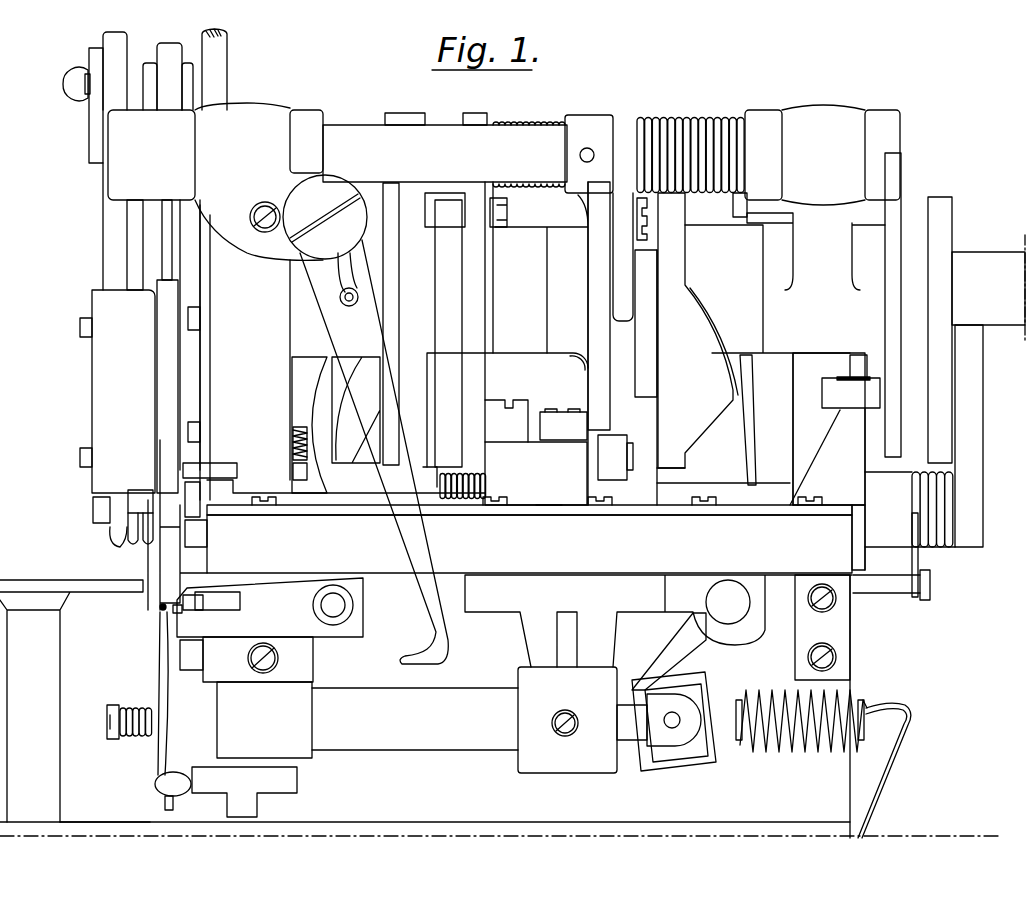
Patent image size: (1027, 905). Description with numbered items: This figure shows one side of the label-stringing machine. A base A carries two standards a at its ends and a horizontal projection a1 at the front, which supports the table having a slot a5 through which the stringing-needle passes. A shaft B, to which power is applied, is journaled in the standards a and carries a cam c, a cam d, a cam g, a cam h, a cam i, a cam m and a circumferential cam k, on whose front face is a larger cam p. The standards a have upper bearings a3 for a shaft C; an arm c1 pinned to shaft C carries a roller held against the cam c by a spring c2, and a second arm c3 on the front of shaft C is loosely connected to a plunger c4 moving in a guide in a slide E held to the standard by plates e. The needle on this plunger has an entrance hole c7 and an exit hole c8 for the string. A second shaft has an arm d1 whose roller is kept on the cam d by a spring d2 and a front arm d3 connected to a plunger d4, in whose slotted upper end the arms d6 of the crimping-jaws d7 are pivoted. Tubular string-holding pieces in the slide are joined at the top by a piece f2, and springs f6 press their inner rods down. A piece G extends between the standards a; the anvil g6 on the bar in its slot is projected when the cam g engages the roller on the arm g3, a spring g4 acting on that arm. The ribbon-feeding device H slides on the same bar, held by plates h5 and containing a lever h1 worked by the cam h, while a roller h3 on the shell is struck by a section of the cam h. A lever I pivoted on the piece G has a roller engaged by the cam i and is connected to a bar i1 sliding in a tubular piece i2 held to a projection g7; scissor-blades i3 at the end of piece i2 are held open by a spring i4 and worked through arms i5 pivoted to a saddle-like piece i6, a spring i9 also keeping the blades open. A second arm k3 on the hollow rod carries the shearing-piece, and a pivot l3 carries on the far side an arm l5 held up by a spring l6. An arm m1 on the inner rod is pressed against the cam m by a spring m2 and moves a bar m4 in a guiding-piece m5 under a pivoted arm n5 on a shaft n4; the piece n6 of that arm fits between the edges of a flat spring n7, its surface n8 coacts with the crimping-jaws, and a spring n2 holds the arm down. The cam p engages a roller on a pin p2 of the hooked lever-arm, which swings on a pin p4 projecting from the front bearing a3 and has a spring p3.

The second arm c3 is at (95, 97).
The arm d3 is at (168, 50).
The plunger d4 is at (188, 63).
The plunger c4 is at (100, 548).
The bearings a3 is at (215, 181).
The standards a is at (532, 355).
The pin p4 is at (325, 217).
The spring p3 is at (340, 268).
The pin p2 is at (374, 452).
The circumferential cam k is at (398, 324).
The cam d is at (445, 330).
The shaft C is at (445, 147).
The spring d2 is at (556, 120).
The arm d1 is at (490, 214).
The ribbon-feeding device H is at (536, 452).
The roller h3 is at (563, 425).
The cam h is at (599, 306).
The lever h1 is at (598, 462).
The plates h5 is at (546, 517).
The spring c2 is at (678, 205).
The cam c is at (646, 323).
The slot a5 is at (822, 155).
The cam i is at (698, 330).
The lever I is at (694, 522).
The cam g is at (893, 305).
The cam m is at (940, 330).
The shaft B is at (988, 287).
The arm m1 is at (953, 457).
The spring m2 is at (910, 522).
The upwardly-projecting arm g3 is at (822, 457).
The piece G is at (529, 535).
The anvil g6 is at (207, 535).
The spring g4 is at (822, 612).
The base A is at (500, 816).
The projection g7 is at (567, 720).
The tubular piece i2 is at (415, 719).
The bar i1 is at (659, 720).
The spring i9 is at (820, 742).
The scissor-blades i3 is at (160, 665).
The pivoted arm n5 is at (270, 607).
The shaft n4 is at (333, 605).
The flat spring n7 is at (208, 612).
The surface n8 is at (165, 607).
The upwardly-projecting piece n6 is at (180, 613).
The bar m4 is at (191, 655).
The guiding-piece m5 is at (258, 659).
The saddle-like piece i6 is at (264, 720).
The spring i4 is at (137, 712).
The arms i5 is at (155, 790).
The horizontal projection a1 is at (105, 808).
The slide E is at (123, 391).
The exit hole c8 is at (92, 388).
The arms d6 is at (166, 276).
The crimping-jaws d7 is at (167, 386).
The entrance hole c7 is at (192, 331).
The plates e is at (190, 335).
The arm c1 is at (192, 426).
The pivot l3 is at (224, 463).
The second arm k3 is at (193, 499).
The spring l6 is at (293, 447).
The second arm l5 is at (293, 474).
The spring n2 is at (309, 425).
The cam p is at (356, 410).
The piece f2 is at (140, 489).
The springs f6 is at (133, 546).